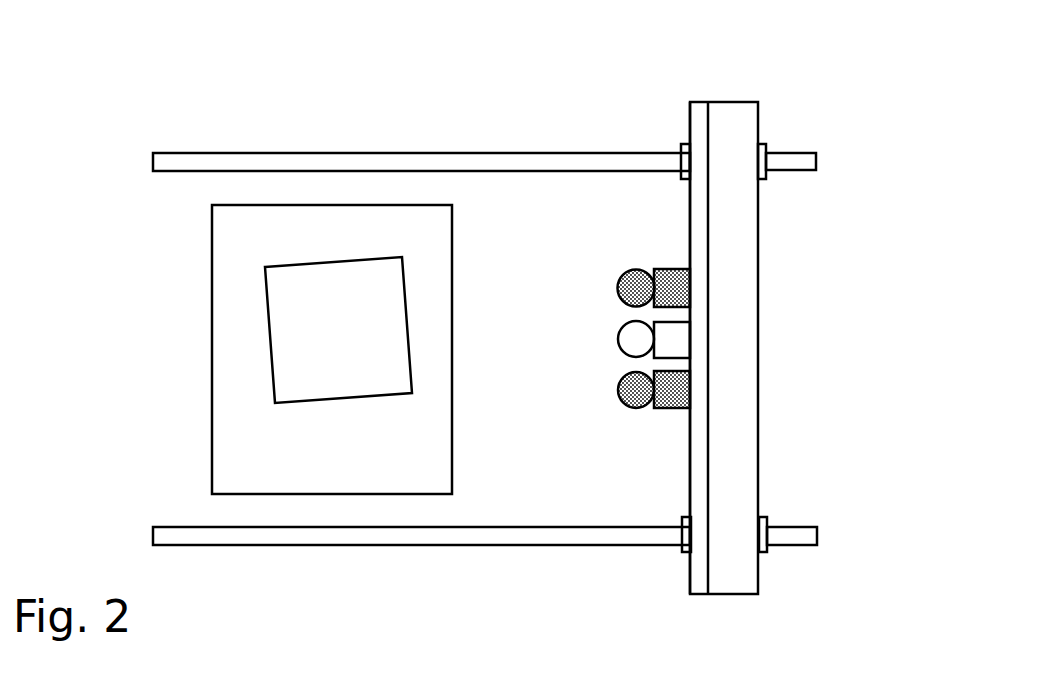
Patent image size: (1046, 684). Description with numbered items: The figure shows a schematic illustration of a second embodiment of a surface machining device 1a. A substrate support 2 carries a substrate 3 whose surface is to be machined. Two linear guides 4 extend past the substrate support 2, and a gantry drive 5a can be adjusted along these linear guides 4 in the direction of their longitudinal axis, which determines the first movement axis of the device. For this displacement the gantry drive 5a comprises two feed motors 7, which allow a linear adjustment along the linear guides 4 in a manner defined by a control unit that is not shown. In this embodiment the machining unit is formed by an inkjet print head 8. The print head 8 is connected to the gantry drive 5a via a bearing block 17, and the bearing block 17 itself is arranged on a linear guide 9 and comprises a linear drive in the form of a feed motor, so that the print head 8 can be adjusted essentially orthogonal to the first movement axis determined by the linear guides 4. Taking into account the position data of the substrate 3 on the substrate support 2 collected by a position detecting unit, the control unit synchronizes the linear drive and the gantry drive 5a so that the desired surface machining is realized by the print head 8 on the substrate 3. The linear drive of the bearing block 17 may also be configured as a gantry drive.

The surface machining device 1a is at (805, 297).
The substrate support 2 is at (248, 431).
The substrate 3 is at (293, 332).
The linear guides 4 is at (174, 163).
The gantry drive 5a is at (735, 247).
The feed motors 7 is at (764, 152).
The print head 8 is at (630, 340).
The linear guide 9 is at (698, 433).
The bearing block 17 is at (676, 345).